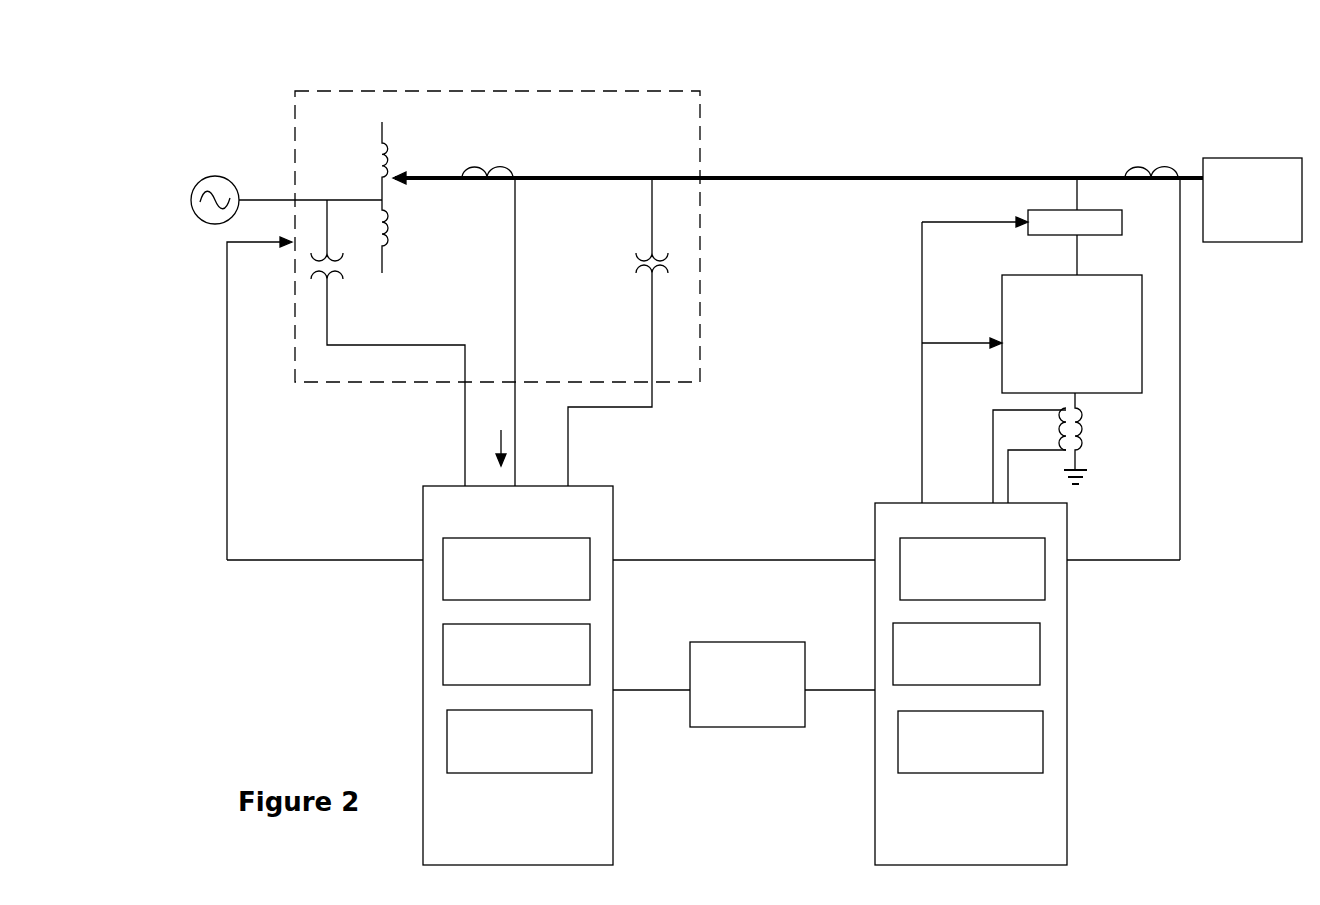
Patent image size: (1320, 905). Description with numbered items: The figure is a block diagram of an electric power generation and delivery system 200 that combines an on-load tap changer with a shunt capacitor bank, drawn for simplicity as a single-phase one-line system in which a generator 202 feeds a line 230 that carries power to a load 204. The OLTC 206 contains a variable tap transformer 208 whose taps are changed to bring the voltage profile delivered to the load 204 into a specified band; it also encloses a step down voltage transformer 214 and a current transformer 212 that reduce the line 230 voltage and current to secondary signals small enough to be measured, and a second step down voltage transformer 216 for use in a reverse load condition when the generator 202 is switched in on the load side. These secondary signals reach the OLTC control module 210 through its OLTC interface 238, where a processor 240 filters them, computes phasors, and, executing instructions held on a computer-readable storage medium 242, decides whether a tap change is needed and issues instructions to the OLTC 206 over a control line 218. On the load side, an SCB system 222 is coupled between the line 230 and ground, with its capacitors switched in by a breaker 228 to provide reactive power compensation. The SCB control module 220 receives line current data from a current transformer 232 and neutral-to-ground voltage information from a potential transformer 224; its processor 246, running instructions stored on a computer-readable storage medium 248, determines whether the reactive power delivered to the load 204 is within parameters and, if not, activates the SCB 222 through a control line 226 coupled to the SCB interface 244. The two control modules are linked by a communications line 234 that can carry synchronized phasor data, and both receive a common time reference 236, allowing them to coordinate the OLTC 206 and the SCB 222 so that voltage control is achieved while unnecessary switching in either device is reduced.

The electric power generation and delivery system 200 is at (1067, 33).
The generator 202 is at (190, 199).
The load 204 is at (1234, 222).
The OLTC 206 is at (614, 141).
The variable tap transformer 208 is at (378, 173).
The OLTC control module 210 is at (569, 839).
The current transformer 212 is at (490, 160).
The step down voltage transformer 214 is at (632, 277).
The second step down voltage transformer 216 is at (345, 277).
The control line 218 is at (229, 468).
The SCB control module 220 is at (1023, 836).
The SCB system 222 is at (1054, 358).
The potential transformer 224 is at (1086, 438).
The control line 226 is at (918, 424).
The breaker 228 is at (1122, 222).
The line 230 is at (797, 181).
The current transformer 232 is at (1158, 168).
The communications line 234 is at (772, 560).
The common time reference 236 is at (733, 721).
The OLTC interface 238 is at (501, 591).
The processor 240 is at (501, 676).
The computer-readable storage medium 242 is at (504, 764).
The SCB interface 244 is at (957, 591).
The processor 246 is at (951, 676).
The computer-readable storage medium 248 is at (955, 764).